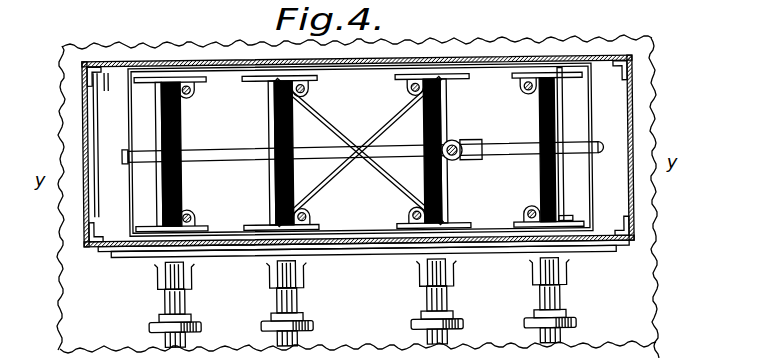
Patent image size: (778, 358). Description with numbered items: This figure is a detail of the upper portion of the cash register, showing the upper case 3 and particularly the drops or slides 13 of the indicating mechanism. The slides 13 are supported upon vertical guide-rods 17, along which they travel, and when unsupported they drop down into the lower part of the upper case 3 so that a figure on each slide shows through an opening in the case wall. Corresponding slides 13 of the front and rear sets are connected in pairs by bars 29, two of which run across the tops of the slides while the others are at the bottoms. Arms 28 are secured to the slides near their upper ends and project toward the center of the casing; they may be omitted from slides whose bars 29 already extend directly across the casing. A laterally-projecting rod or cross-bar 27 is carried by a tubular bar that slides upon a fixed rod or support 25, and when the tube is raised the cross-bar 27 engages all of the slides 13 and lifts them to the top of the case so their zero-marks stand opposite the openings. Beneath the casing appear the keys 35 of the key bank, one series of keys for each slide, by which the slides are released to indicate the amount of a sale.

The upper case 3 is at (628, 103).
The slides or drops 13 is at (151, 80).
The vertical guide-rods 17 is at (191, 94).
The fixed rod or support 25 is at (455, 162).
The laterally-projecting rod 27 is at (235, 156).
The arms 28 is at (159, 125).
The bars 29 is at (127, 182).
The keys 35 is at (199, 322).